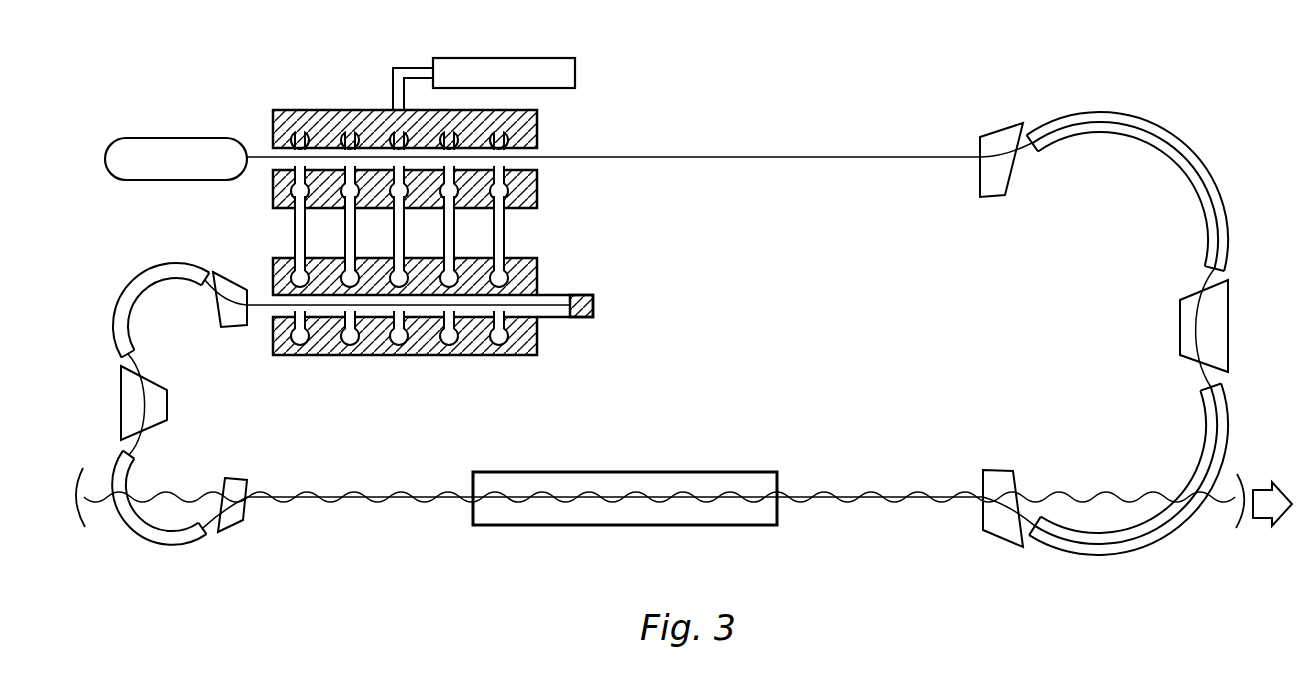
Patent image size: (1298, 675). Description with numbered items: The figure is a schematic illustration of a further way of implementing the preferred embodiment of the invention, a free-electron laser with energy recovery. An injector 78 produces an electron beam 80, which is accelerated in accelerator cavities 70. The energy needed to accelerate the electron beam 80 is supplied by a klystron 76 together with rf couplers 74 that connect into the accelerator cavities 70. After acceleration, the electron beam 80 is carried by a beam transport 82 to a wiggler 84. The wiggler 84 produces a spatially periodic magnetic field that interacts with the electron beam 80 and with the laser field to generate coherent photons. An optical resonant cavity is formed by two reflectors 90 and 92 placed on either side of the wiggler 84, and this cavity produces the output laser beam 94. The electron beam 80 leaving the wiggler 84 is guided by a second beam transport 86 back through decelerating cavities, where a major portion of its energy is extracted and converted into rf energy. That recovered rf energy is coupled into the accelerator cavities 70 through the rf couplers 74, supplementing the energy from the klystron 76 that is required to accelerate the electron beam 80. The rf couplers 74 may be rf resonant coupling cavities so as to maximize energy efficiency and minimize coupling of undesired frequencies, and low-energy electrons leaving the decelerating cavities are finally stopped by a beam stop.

The accelerator cavities 70 is at (541, 125).
The rf couplers 74 is at (280, 239).
The klystron 76 is at (526, 58).
The injector 78 is at (218, 138).
The electron beam 80 is at (885, 152).
The beam transport 82 is at (1180, 124).
The wiggler 84 is at (727, 527).
The beam transport 86 is at (164, 267).
The reflector 90 is at (1243, 527).
The reflector 92 is at (82, 516).
The output laser beam 94 is at (1284, 520).